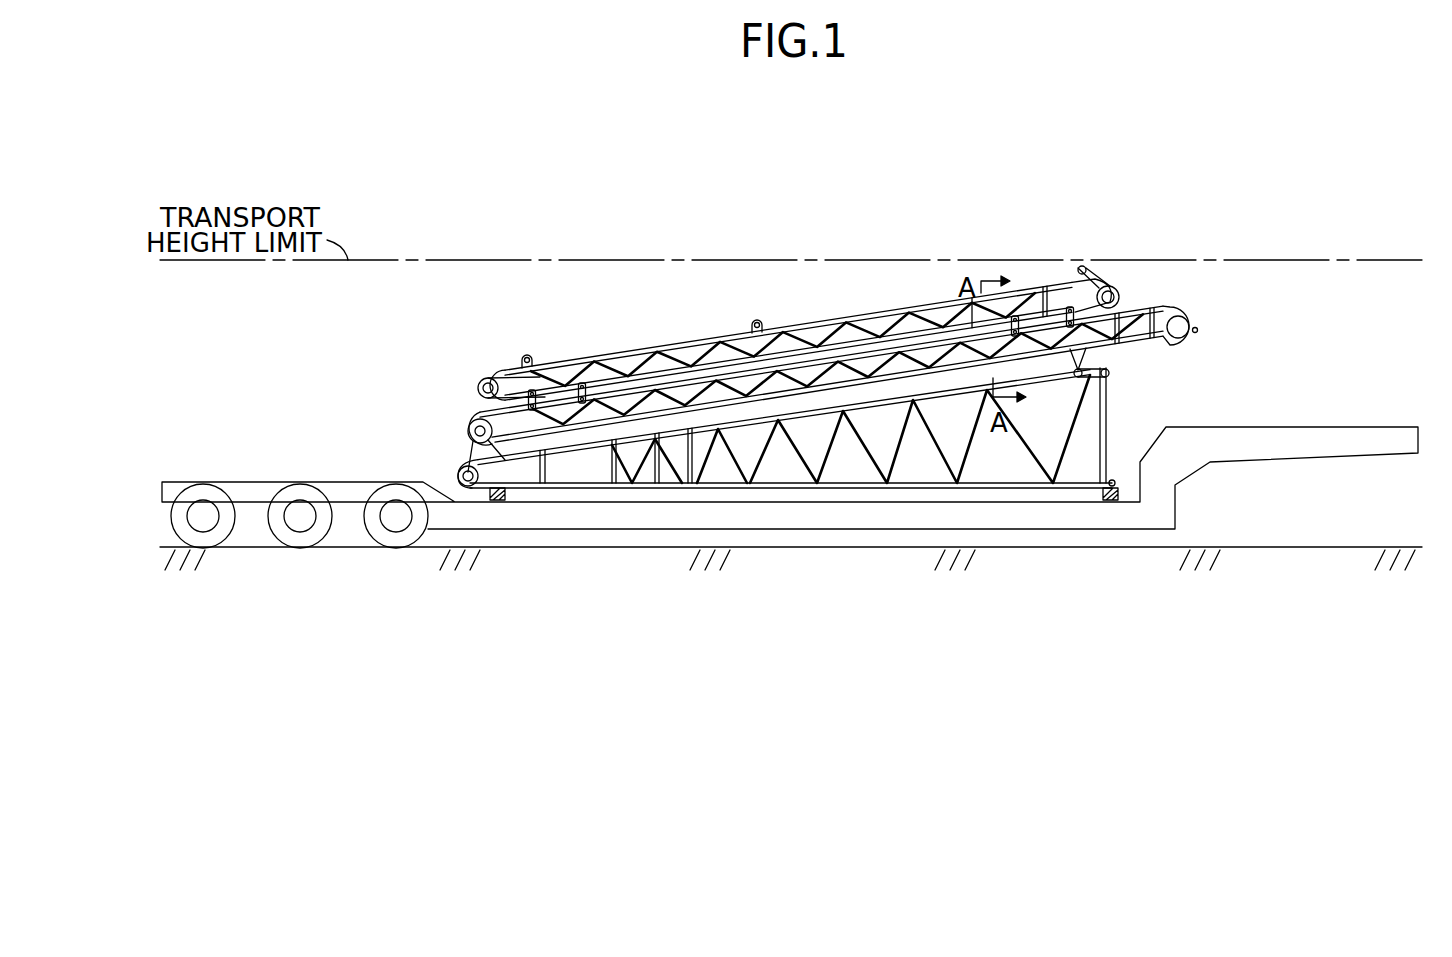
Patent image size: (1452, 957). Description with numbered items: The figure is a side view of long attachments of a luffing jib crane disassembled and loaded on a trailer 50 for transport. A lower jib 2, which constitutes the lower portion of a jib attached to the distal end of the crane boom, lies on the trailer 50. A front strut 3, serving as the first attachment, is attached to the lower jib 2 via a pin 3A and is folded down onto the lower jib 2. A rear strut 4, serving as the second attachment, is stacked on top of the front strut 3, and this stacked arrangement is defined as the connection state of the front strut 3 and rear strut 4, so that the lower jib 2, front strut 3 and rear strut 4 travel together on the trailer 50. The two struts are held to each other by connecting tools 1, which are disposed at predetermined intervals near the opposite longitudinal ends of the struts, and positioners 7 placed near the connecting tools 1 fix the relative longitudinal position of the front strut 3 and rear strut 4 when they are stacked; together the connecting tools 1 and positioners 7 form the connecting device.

The connecting tool 1 is at (580, 390).
The lower jib 2 is at (983, 489).
The front strut 3 is at (848, 362).
The pin 3A is at (474, 428).
The rear strut 4 is at (921, 311).
The positioner 7 is at (497, 380).
The trailer 50 is at (1257, 428).